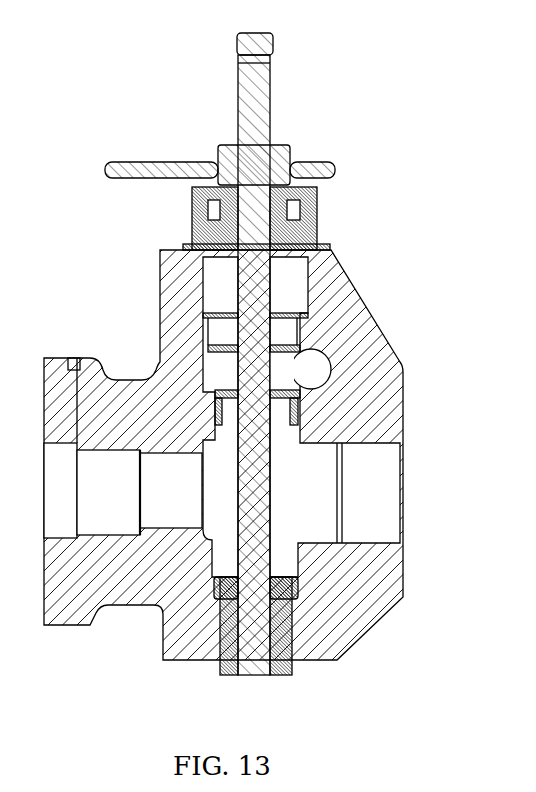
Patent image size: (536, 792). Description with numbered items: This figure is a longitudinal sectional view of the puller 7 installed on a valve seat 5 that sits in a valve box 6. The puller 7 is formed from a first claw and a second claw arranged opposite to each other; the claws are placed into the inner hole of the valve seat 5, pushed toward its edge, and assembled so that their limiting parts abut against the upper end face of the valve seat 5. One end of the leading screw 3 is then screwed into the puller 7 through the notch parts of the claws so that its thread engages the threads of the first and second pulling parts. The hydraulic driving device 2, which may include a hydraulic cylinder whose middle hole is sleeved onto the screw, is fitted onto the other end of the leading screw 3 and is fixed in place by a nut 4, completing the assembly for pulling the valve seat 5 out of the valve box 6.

The hydraulic driving device 2 is at (318, 225).
The leading screw 3 is at (255, 510).
The nut 4 is at (280, 157).
The valve seat 5 is at (292, 600).
The valve box 6 is at (378, 370).
The puller 7 is at (237, 657).